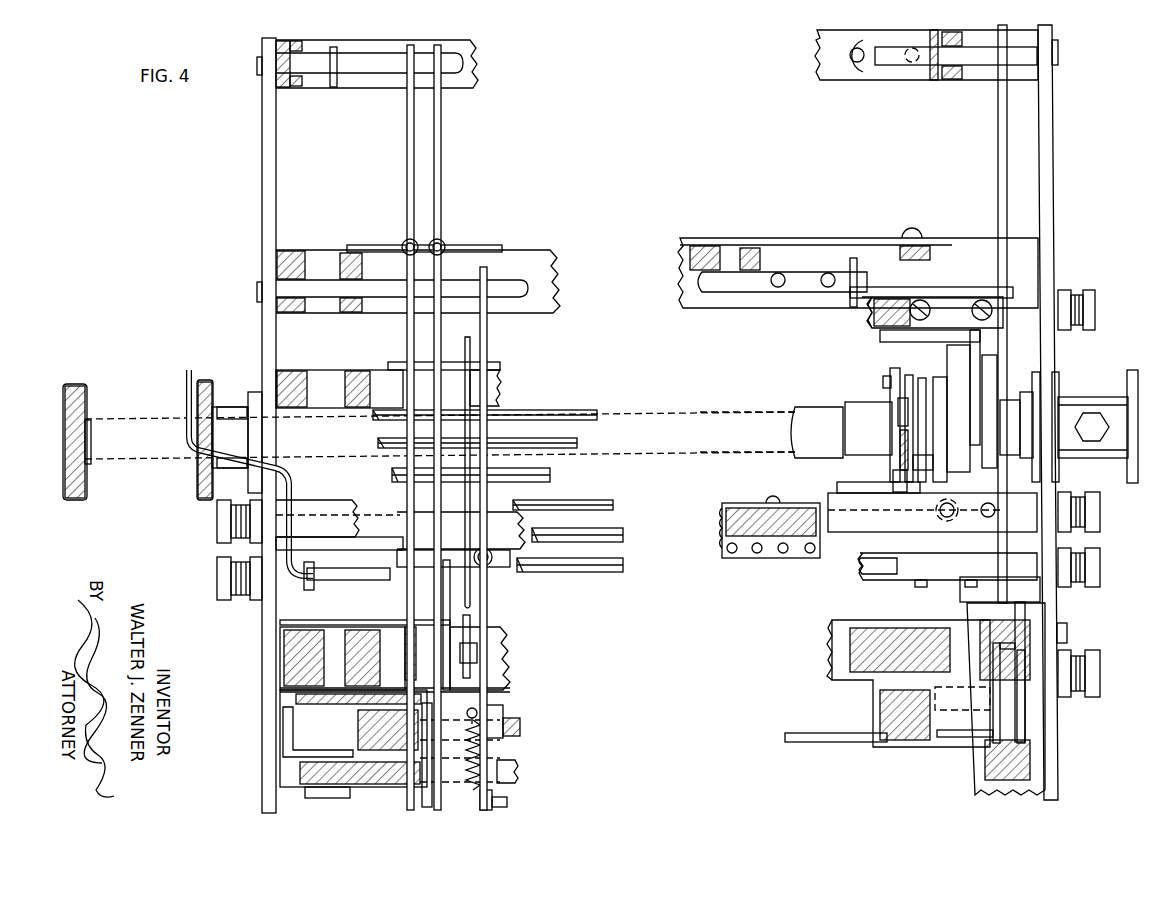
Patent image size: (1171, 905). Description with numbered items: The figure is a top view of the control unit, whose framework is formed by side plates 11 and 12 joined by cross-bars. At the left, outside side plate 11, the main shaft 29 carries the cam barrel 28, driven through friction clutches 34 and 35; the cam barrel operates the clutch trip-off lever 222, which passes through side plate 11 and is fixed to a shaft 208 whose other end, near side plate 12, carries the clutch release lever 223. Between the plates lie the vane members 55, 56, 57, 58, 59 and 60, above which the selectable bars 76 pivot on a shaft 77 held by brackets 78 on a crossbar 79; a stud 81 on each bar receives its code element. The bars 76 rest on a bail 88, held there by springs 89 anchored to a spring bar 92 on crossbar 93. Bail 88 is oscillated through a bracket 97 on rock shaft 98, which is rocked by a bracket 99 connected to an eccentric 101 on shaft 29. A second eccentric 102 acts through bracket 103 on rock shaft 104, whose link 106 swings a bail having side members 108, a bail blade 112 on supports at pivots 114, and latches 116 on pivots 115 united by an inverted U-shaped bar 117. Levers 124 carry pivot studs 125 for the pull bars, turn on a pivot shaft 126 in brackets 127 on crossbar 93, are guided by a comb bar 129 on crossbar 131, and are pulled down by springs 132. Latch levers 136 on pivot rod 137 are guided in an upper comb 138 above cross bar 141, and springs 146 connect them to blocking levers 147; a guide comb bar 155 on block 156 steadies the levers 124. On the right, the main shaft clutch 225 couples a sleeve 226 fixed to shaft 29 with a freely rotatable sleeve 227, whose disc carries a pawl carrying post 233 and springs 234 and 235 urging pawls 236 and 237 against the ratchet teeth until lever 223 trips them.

The side plate 11 is at (262, 158).
The side plate 12 is at (1052, 142).
The cam barrel 28 is at (89, 466).
The main shaft 29 is at (765, 415).
The friction clutch 34 is at (78, 500).
The friction clutch 35 is at (205, 498).
The vane member 55 is at (597, 413).
The vane member 56 is at (577, 442).
The vane member 57 is at (550, 473).
The vane member 58 is at (613, 503).
The vane member 59 is at (623, 532).
The vane member 60 is at (623, 563).
The selectable bar 76 is at (410, 135).
The pivot shaft 77 is at (962, 66).
The bracket 78 is at (870, 80).
The crossbar 79 is at (820, 42).
The stud 81 is at (480, 410).
The bail 88 is at (998, 146).
The spring 89 is at (444, 242).
The spring bar 92 is at (490, 245).
The crossbar 93 is at (540, 264).
The bracket 97 is at (975, 290).
The rock shaft 98 is at (862, 320).
The bracket 99 is at (985, 347).
The eccentric 101 is at (993, 372).
The eccentric 102 is at (938, 386).
The bracket 103 is at (835, 490).
The rock shaft 104 is at (843, 527).
The link 106 is at (1025, 612).
The side member 108 is at (1027, 710).
The bail blade 112 is at (890, 747).
The pivot 114 is at (1003, 645).
The pivot 115 is at (950, 740).
The latch 116 is at (993, 672).
The inverted U-shaped bar 117 is at (945, 690).
The lever 124 is at (487, 323).
The pivot stud 125 is at (490, 653).
The pivot shaft 126 is at (725, 287).
The bracket 127 is at (800, 300).
The comb bar 129 is at (500, 366).
The crossbar 131 is at (500, 390).
The spring 132 is at (490, 566).
The latch lever 136 is at (502, 770).
The pivot rod 137 is at (515, 718).
The upper comb 138 is at (478, 710).
The cross bar 141 is at (415, 785).
The spring 146 is at (483, 752).
The blocking lever 147 is at (508, 803).
The guide comb bar 155 is at (825, 733).
The block 156 is at (967, 780).
The shaft 208 is at (396, 578).
The clutch trip-off lever 222 is at (186, 375).
The clutch release lever 223 is at (898, 568).
The main shaft clutch 225 is at (880, 392).
The sleeve 226 is at (862, 404).
The sleeve 227 is at (975, 475).
The pawl carrying post 233 is at (882, 375).
The spring 234 is at (913, 466).
The spring 235 is at (890, 455).
The pawl 236 is at (900, 372).
The pawl 237 is at (895, 407).